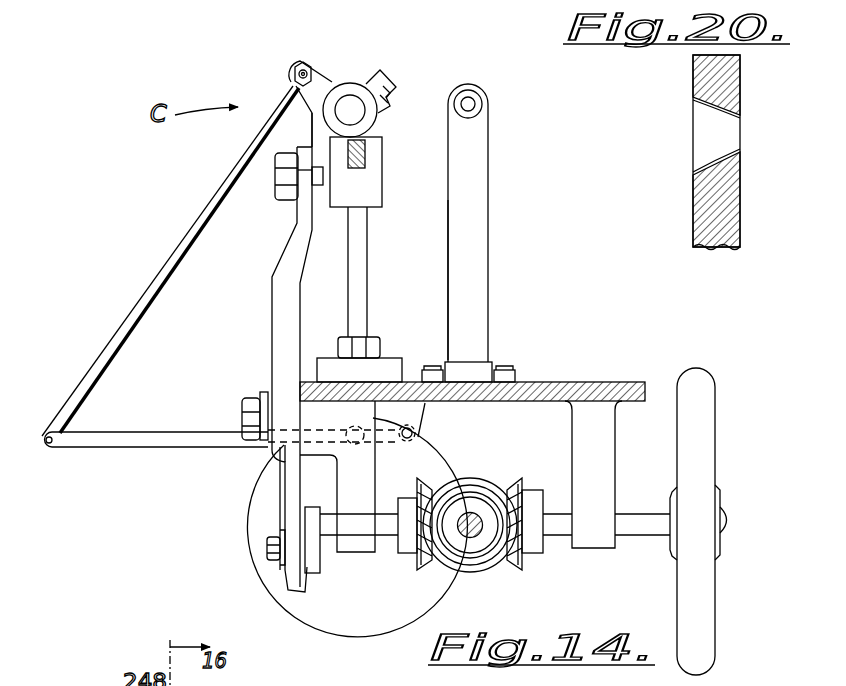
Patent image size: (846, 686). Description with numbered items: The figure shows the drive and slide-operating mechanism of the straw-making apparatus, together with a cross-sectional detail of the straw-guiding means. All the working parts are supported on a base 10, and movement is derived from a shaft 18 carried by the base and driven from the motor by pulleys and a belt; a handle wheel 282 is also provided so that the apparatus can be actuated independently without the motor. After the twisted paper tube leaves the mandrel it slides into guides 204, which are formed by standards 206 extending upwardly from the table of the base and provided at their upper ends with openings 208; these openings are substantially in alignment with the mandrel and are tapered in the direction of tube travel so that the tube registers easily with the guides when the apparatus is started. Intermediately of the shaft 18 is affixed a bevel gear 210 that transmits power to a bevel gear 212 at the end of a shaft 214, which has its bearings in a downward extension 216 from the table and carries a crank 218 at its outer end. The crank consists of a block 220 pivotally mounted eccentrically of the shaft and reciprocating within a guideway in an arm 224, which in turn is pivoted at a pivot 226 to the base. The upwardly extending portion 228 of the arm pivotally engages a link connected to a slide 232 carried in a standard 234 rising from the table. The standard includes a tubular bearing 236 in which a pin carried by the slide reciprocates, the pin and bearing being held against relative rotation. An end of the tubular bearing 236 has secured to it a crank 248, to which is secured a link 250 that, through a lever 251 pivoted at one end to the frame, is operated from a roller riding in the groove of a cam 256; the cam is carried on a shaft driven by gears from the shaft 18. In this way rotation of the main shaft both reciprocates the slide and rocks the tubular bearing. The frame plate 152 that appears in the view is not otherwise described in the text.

In FIG. 14, the base 10 is at (542, 357).
In FIG. 14, the shaft 18 is at (509, 477).
In FIG. 14, the frame plate 152 is at (553, 383).
In FIG. 14, the guides 204 is at (497, 262).
In FIG. 20, the guides 204 is at (690, 179).
In FIG. 14, the standards 206 is at (487, 225).
In FIG. 20, the standards 206 is at (693, 228).
In FIG. 14, the openings 208 is at (482, 106).
In FIG. 20, the openings 208 is at (693, 112).
In FIG. 14, the bevel gear 210 is at (480, 519).
In FIG. 14, the bevel gear 212 is at (423, 489).
In FIG. 14, the shaft 214 is at (388, 534).
In FIG. 14, the downward extension 216 is at (352, 546).
In FIG. 14, the crank 218 is at (277, 570).
In FIG. 14, the block 220 is at (303, 593).
In FIG. 14, the arm 224 is at (292, 582).
In FIG. 14, the pivot 226 is at (246, 412).
In FIG. 14, the upwardly extending portion 228 is at (270, 338).
In FIG. 14, the slide 232 is at (362, 156).
In FIG. 14, the standard 234 is at (380, 298).
In FIG. 14, the tubular bearing 236 is at (358, 117).
In FIG. 14, the crank 248 is at (362, 73).
In FIG. 14, the link 250 is at (123, 338).
In FIG. 14, the lever 251 is at (123, 442).
In FIG. 14, the cam 256 is at (436, 592).
In FIG. 14, the handle wheel 282 is at (676, 596).